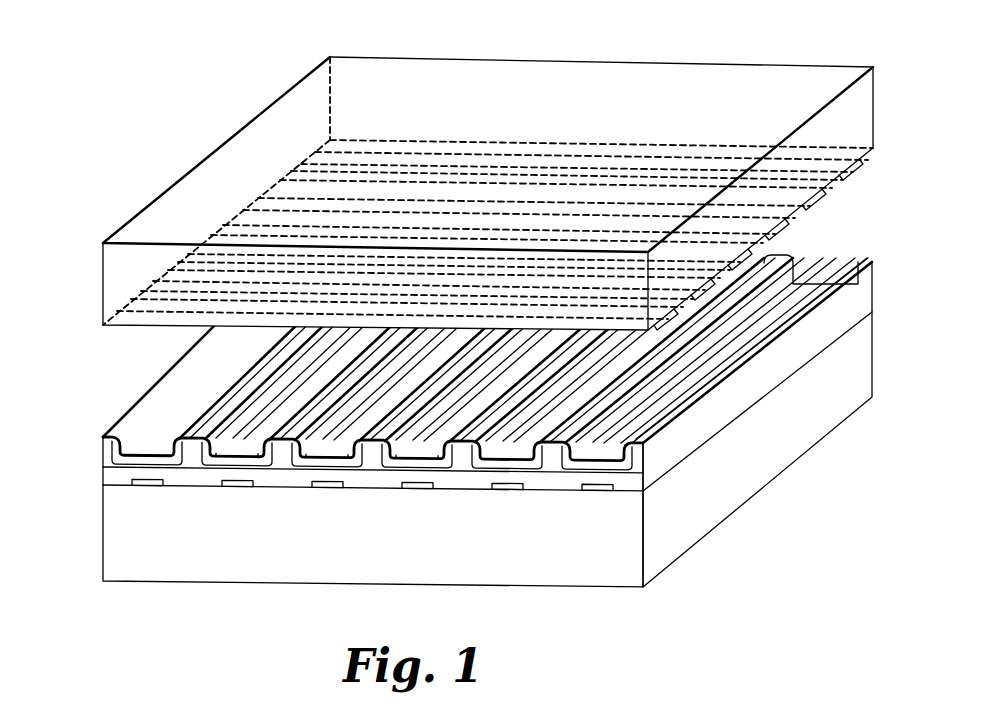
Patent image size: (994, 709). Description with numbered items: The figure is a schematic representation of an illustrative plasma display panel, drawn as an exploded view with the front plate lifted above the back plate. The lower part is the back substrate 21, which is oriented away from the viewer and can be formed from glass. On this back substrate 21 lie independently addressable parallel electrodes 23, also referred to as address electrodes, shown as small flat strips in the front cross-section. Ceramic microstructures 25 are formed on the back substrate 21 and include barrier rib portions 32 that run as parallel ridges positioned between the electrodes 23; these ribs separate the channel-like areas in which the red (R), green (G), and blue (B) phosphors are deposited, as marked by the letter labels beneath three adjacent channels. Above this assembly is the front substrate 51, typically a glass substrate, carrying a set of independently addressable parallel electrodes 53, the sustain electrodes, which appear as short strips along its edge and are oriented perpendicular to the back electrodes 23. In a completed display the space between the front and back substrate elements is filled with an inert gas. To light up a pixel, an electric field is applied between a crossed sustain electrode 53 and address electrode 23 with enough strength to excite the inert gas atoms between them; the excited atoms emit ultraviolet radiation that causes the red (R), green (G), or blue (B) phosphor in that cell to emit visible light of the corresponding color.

The back substrate 21 is at (655, 548).
The parallel electrodes 23 is at (590, 489).
The ceramic microstructures 25 is at (628, 491).
The barrier rib portions 32 is at (108, 446).
The front substrate 51 is at (832, 82).
The front electrodes 53 is at (812, 204).
The red phosphor R is at (263, 468).
The green phosphor G is at (352, 469).
The blue phosphor B is at (438, 470).